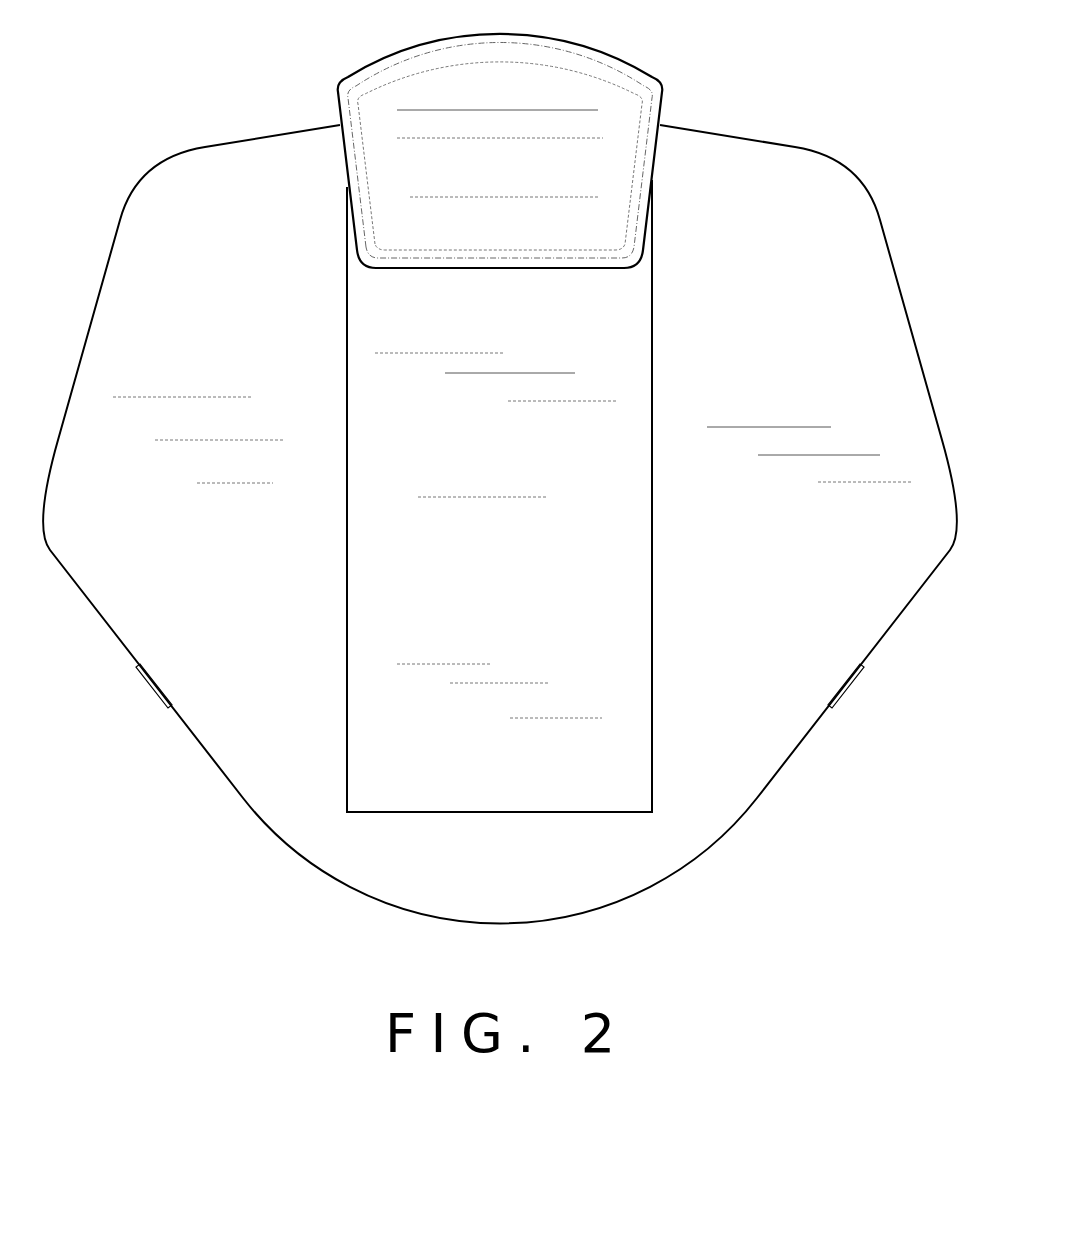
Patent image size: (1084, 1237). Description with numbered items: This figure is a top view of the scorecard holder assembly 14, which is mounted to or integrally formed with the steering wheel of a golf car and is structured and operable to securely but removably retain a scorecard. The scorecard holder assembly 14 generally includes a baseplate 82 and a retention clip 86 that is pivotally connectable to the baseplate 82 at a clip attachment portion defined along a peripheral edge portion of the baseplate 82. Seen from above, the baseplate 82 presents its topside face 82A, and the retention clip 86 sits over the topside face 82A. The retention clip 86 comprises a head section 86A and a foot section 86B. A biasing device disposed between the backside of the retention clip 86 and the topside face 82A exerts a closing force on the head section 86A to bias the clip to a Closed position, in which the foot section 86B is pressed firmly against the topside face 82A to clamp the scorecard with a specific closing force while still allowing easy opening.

The scorecard holder assembly 14 is at (762, 100).
The baseplate 82 is at (792, 554).
The topside face 82A is at (833, 265).
The retention clip 86 is at (490, 183).
The head section 86A is at (603, 110).
The foot section 86B is at (603, 225).